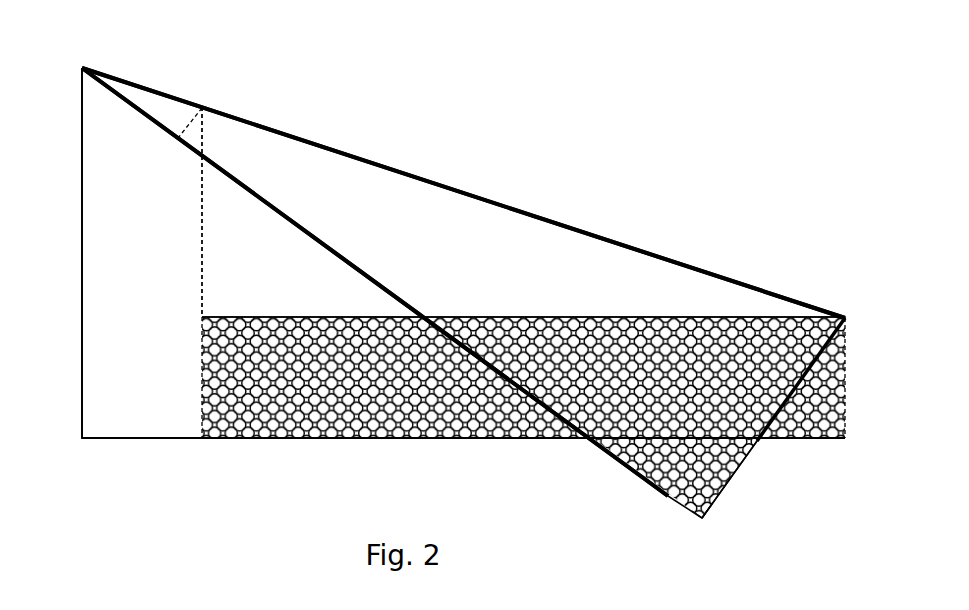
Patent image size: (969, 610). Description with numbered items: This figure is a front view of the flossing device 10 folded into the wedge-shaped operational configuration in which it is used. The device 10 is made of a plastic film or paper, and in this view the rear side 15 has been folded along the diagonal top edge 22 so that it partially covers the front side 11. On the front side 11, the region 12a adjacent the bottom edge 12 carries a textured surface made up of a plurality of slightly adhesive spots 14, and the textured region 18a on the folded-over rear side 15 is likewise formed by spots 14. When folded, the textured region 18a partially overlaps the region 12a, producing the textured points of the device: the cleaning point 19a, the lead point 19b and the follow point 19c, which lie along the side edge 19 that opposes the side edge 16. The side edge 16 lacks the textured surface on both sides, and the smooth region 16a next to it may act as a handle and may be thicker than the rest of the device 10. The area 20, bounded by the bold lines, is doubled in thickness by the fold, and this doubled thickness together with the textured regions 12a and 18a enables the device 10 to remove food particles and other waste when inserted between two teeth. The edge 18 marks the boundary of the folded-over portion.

The flossing device 10 is at (582, 92).
The front side 11 is at (272, 280).
The bottom edge 12 is at (357, 438).
The region 12a is at (290, 413).
The spots 14 is at (583, 403).
The rear side 15 is at (537, 274).
The side edge 16 is at (102, 202).
The smooth region 16a is at (123, 276).
The first member 18 is at (309, 232).
The region 18a is at (707, 317).
The side edge 19 is at (849, 340).
The cleaning point 19a is at (847, 439).
The lead point 19b is at (702, 522).
The follow point 19c is at (847, 317).
The area 20 is at (388, 223).
The top edge 22 is at (263, 126).